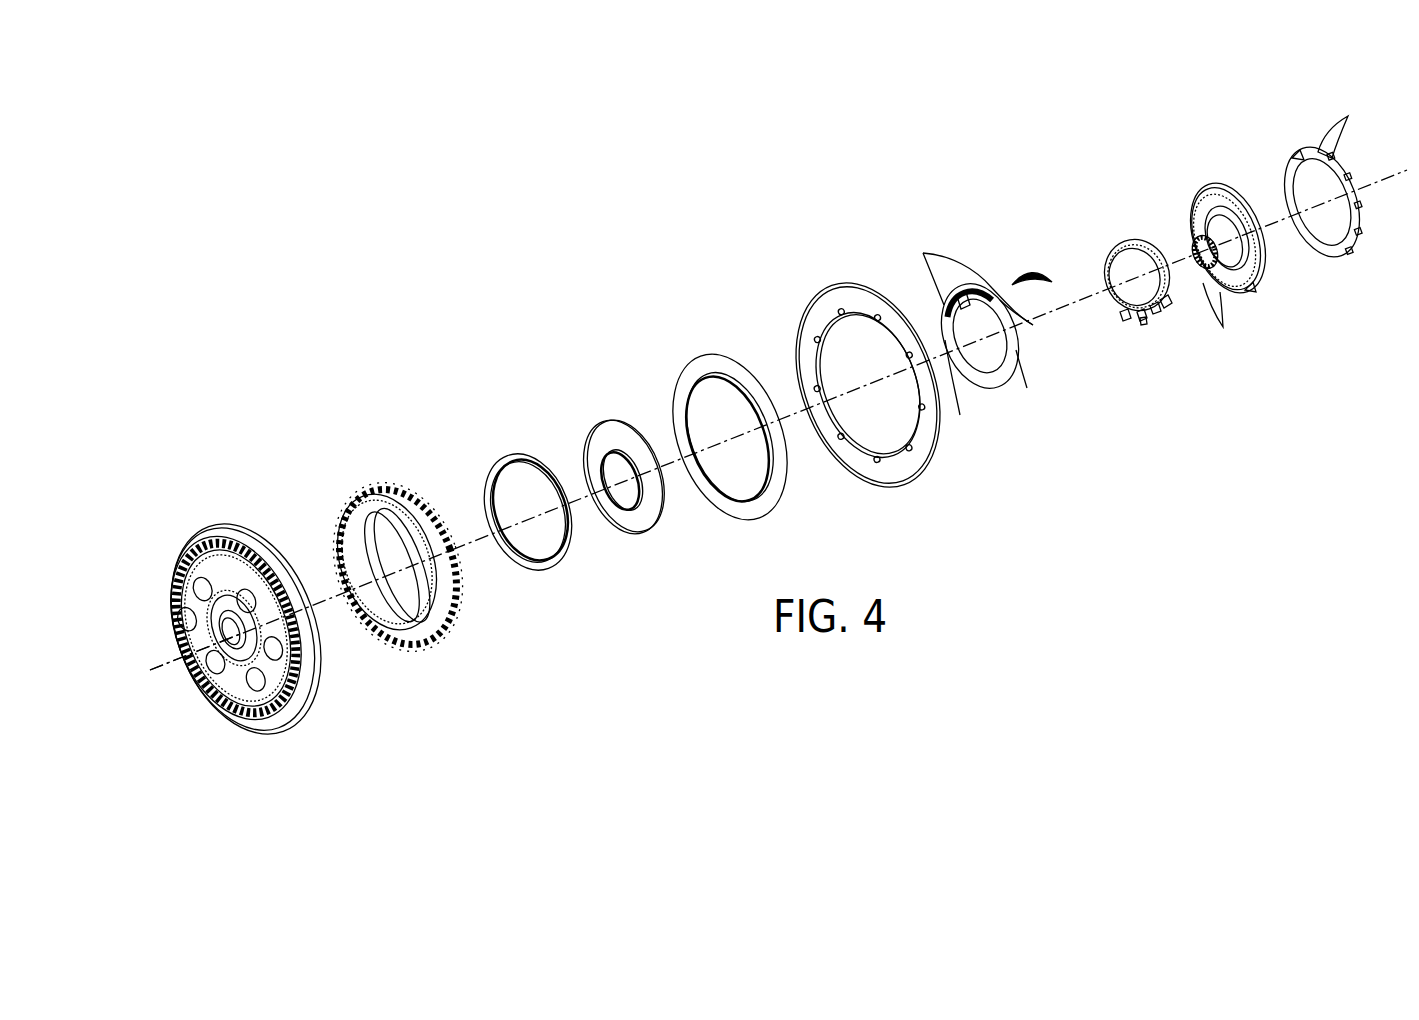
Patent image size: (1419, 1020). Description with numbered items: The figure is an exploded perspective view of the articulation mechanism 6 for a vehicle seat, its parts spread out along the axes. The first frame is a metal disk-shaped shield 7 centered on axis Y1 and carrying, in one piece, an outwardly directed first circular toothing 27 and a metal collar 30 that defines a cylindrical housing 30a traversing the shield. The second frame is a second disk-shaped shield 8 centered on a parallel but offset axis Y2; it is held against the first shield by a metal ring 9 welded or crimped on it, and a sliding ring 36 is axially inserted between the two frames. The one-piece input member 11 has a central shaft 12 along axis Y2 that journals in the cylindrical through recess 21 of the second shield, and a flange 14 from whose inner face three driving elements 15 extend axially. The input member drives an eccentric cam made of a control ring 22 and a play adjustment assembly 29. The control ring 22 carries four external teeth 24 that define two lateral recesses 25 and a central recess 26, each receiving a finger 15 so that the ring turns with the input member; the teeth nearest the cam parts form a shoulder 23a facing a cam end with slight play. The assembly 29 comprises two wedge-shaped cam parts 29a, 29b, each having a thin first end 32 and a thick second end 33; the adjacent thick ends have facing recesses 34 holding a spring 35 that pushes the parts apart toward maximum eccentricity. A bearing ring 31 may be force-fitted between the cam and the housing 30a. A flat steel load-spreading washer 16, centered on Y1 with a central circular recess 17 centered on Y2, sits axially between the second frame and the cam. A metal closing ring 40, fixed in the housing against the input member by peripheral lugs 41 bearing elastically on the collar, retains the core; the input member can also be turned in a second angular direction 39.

The articulation mechanism 6 is at (607, 155).
The first shield 7 is at (385, 573).
The second shield 8 is at (237, 745).
The metal ring 9 is at (913, 470).
The input member 11 is at (1233, 227).
The central shaft 12 is at (1220, 233).
The flange 14 is at (1203, 200).
The driving elements 15 is at (1253, 290).
The load-spreading washer 16 is at (607, 433).
The central circular recess 17 is at (638, 527).
The cylindrical through recess 21 is at (233, 627).
The control ring 22 is at (1113, 253).
The shoulder 23a is at (1167, 293).
The external teeth 24 is at (1097, 292).
The lateral recesses 25 is at (1133, 310).
The central recess 26 is at (1141, 324).
The first circular toothing 27 is at (372, 483).
The play adjustment assembly 29 is at (985, 304).
The cam part 29a is at (1024, 384).
The cam part 29b is at (968, 389).
The metal collar 30 is at (433, 510).
The cylindrical housing 30a is at (365, 533).
The bearing ring 31 is at (563, 557).
The first end 32 is at (1000, 360).
The second end 33 is at (969, 275).
The recesses 34 is at (1022, 326).
The spring 35 is at (1033, 272).
The sliding ring 36 is at (700, 362).
The second angular direction 39 is at (1328, 214).
The closing ring 40 is at (1297, 155).
The peripheral lugs 41 is at (1338, 130).
The axis Y1 is at (1380, 173).
The axis Y2 is at (172, 670).